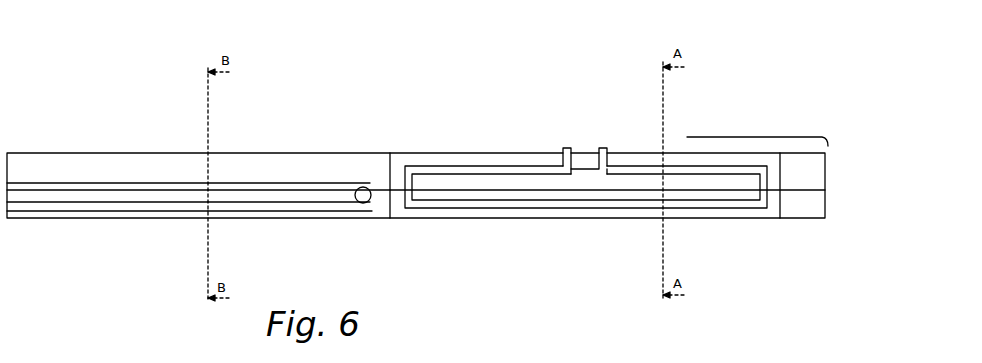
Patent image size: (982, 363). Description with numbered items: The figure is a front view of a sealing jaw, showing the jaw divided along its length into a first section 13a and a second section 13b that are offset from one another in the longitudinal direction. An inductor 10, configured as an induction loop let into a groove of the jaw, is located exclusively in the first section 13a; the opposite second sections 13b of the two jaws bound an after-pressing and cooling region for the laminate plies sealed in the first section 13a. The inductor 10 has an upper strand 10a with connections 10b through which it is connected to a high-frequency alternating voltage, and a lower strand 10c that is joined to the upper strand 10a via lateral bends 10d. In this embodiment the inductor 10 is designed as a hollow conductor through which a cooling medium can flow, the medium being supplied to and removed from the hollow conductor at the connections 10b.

The inductor 10 is at (473, 212).
The upper strand 10a is at (700, 172).
The connections 10b is at (616, 143).
The lower strand 10c is at (712, 202).
The lateral bends 10d is at (768, 192).
The first section 13a is at (10, 146).
The second section 13b is at (225, 135).